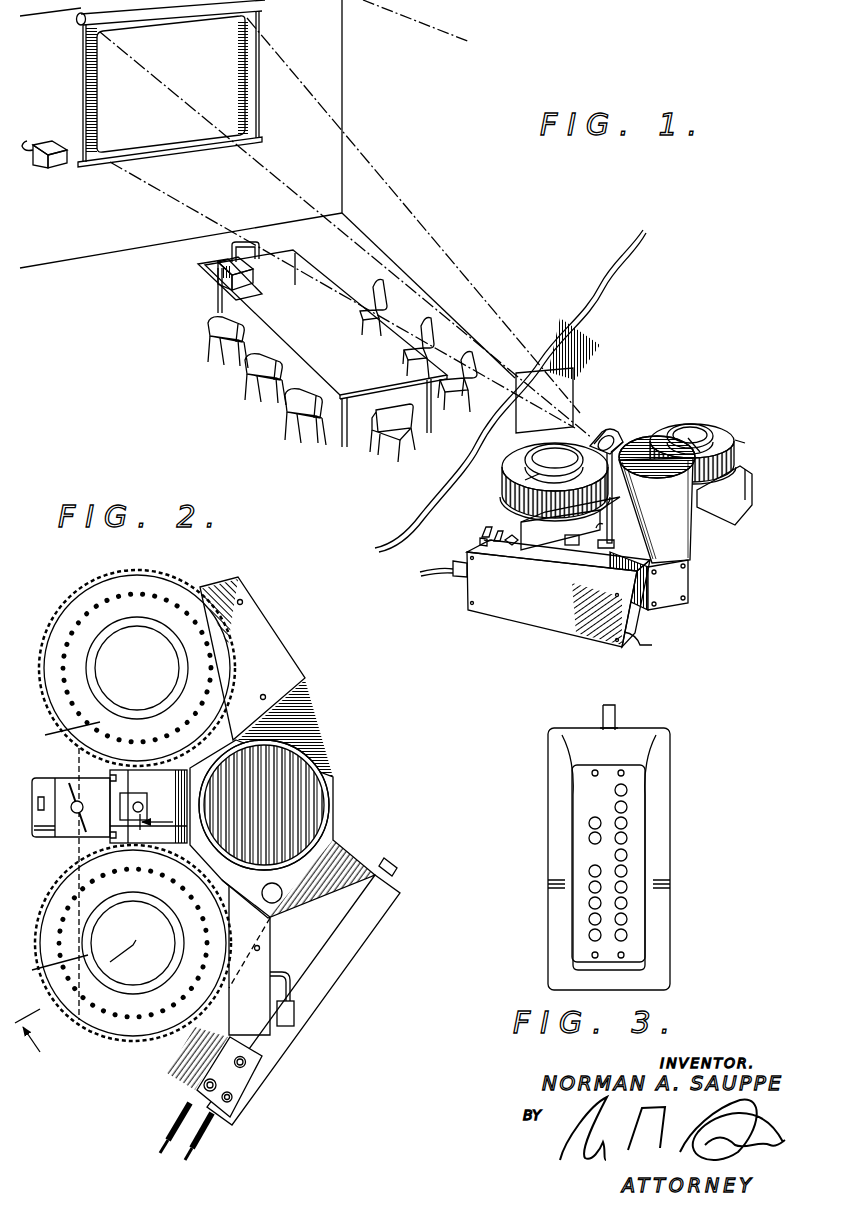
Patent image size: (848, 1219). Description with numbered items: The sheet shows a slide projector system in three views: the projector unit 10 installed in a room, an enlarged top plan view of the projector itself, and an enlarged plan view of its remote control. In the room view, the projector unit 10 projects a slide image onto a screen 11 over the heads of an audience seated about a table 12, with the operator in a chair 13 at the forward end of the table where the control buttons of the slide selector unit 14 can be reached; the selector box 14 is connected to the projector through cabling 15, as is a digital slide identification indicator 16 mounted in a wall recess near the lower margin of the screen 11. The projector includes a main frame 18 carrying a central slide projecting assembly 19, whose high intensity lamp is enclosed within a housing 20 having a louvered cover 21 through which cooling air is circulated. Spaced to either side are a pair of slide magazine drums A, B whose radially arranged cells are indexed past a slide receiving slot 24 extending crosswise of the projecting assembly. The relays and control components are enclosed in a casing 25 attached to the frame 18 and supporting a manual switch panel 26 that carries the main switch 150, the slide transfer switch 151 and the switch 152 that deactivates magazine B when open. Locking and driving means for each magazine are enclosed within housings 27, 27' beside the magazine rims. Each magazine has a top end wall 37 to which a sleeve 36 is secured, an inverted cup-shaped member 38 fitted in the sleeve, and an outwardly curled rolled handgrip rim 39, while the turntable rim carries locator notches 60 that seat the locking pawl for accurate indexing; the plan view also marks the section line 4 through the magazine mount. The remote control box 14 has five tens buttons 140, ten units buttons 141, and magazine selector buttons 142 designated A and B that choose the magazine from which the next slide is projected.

In FIG. 1, the projector unit 10 is at (599, 513).
In FIG. 2, the projector unit 10 is at (202, 849).
In FIG. 1, the screen 11 is at (253, 58).
In FIG. 1, the table 12 is at (322, 272).
In FIG. 1, the chair 13 is at (258, 248).
In FIG. 1, the slide selector unit 14 is at (220, 277).
In FIG. 3, the slide selector unit 14 is at (690, 817).
In FIG. 1, the cabling 15 is at (245, 294).
In FIG. 1, the digital slide identification indicator 16 is at (57, 168).
In FIG. 1, the main frame 18 is at (697, 560).
In FIG. 2, the main frame 18 is at (283, 716).
In FIG. 1, the slide projecting assembly 19 is at (622, 437).
In FIG. 2, the slide projecting assembly 19 is at (66, 841).
In FIG. 1, the housing 20 is at (670, 550).
In FIG. 2, the housing 20 is at (308, 758).
In FIG. 1, the louvered cover 21 is at (671, 467).
In FIG. 2, the louvered cover 21 is at (308, 805).
In FIG. 2, the slide receiving slot 24 is at (140, 797).
In FIG. 1, the casing 25 is at (567, 612).
In FIG. 2, the casing 25 is at (337, 948).
In FIG. 1, the manual switch panel 26 is at (497, 548).
In FIG. 2, the manual switch panel 26 is at (240, 1090).
In FIG. 1, the housing 27 is at (572, 537).
In FIG. 2, the housing 27 is at (269, 957).
In FIG. 1, the housing 27' is at (738, 500).
In FIG. 2, the housing 27' is at (264, 658).
In FIG. 1, the sleeve 36 is at (530, 477).
In FIG. 1, the top end wall 37 is at (712, 430).
In FIG. 2, the top end wall 37 is at (130, 585).
In FIG. 1, the inverted cup-shaped member 38 is at (684, 427).
In FIG. 2, the inverted cup-shaped member 38 is at (135, 805).
In FIG. 1, the rolled handgrip rim 39 is at (563, 450).
In FIG. 2, the rolled handgrip rim 39 is at (52, 858).
In FIG. 2, the locator notches 60 is at (93, 592).
In FIG. 2, the section line 4- 4 is at (93, 941).
In FIG. 1, the slide magazine drum A is at (505, 463).
In FIG. 2, the slide magazine drum A is at (108, 1045).
In FIG. 1, the slide magazine drum B is at (730, 434).
In FIG. 2, the slide magazine drum B is at (172, 582).
In FIG. 3, the tens buttons 140 is at (588, 935).
In FIG. 3, the units buttons 141 is at (628, 790).
In FIG. 3, the magazine selector buttons 142 is at (588, 838).
In FIG. 1, the main switch 150 is at (513, 551).
In FIG. 2, the main switch 150 is at (246, 1060).
In FIG. 1, the switch 151 is at (480, 538).
In FIG. 2, the switch 151 is at (232, 1100).
In FIG. 1, the switch 152 is at (485, 531).
In FIG. 2, the switch 152 is at (205, 1088).